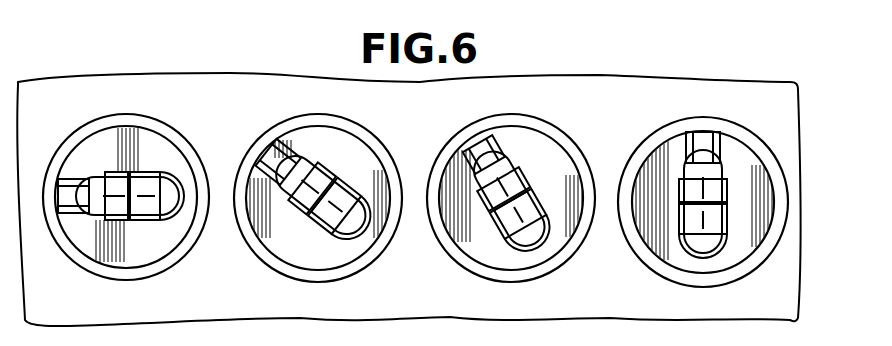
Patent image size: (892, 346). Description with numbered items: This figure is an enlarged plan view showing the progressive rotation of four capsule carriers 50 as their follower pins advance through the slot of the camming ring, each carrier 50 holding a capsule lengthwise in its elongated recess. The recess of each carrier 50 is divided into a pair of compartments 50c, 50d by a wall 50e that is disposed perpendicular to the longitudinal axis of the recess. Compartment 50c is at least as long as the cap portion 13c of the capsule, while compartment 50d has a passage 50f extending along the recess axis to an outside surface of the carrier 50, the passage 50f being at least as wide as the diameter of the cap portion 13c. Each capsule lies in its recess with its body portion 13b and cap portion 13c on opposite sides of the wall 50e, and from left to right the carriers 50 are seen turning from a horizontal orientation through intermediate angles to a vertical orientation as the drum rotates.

The carrier 50 is at (157, 252).
The compartment 50c is at (367, 227).
The compartment 50d is at (110, 172).
The wall 50e is at (128, 178).
The passage 50f is at (683, 145).
The body portion 13b is at (108, 193).
The cap portion 13c is at (148, 200).